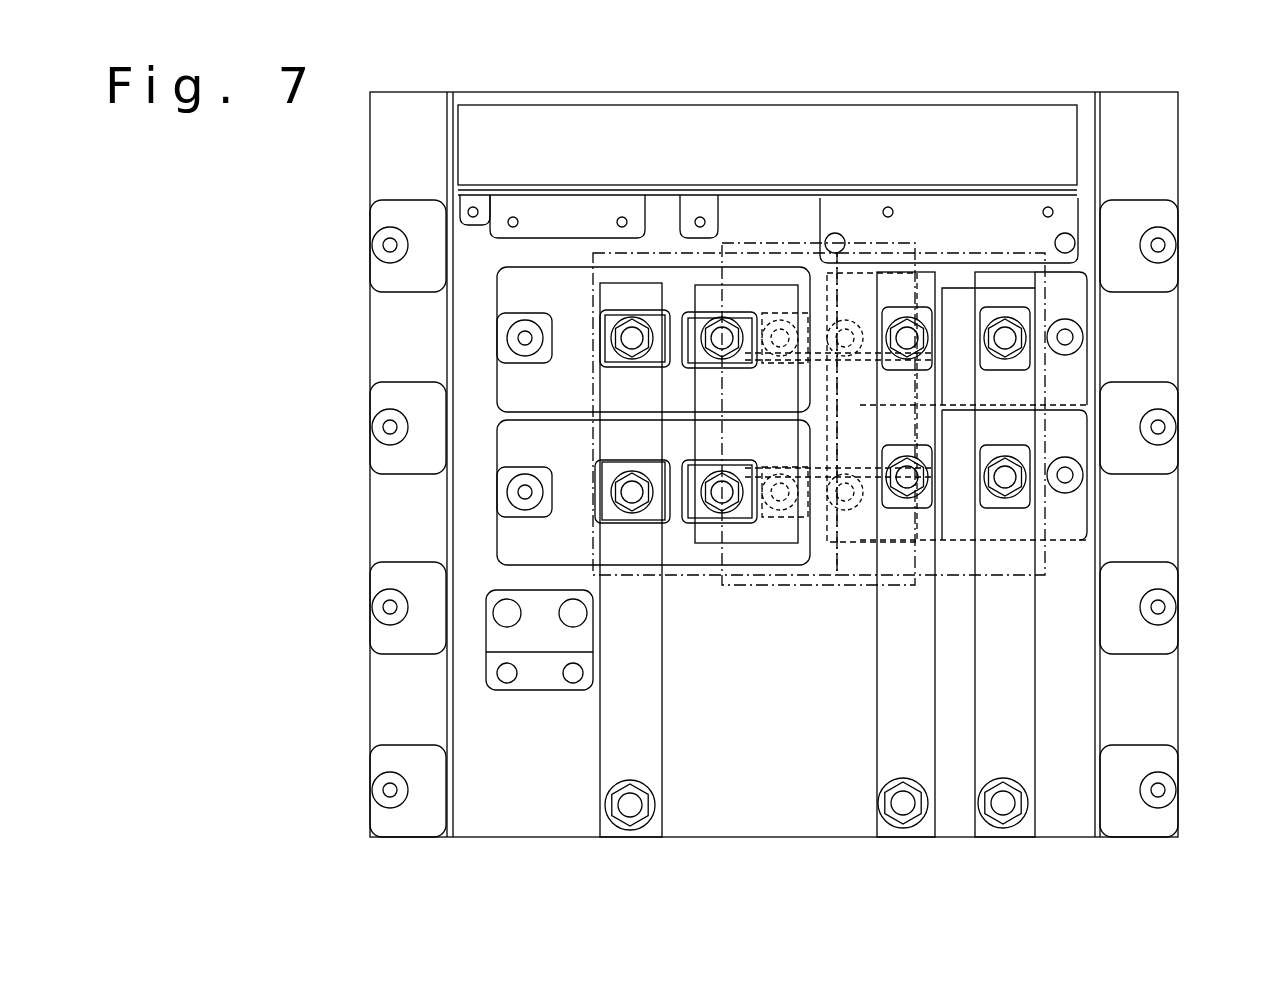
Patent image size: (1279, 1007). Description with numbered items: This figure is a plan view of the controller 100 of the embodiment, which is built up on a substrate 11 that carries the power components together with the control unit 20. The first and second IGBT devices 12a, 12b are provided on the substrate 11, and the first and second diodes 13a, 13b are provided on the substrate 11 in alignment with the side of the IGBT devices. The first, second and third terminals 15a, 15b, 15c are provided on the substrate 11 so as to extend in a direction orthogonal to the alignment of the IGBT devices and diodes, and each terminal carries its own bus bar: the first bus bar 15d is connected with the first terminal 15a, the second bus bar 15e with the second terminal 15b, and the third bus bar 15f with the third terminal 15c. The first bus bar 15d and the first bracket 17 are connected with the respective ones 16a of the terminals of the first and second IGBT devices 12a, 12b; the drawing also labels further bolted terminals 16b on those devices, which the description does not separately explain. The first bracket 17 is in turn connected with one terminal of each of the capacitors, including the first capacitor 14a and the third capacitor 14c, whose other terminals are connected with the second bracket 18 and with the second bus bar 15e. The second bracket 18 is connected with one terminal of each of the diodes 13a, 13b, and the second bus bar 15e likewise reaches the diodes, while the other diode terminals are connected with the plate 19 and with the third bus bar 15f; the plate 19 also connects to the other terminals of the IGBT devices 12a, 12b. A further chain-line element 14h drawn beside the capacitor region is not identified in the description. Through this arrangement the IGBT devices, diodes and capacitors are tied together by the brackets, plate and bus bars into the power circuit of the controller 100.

The controller 100 is at (240, 257).
The substrate 11 is at (475, 815).
The first IGBT device 12a is at (497, 292).
The second IGBT device 12b is at (497, 532).
The first diode 13a is at (1088, 365).
The second diode 13b is at (1090, 530).
The first capacitor 14a is at (790, 243).
The third capacitor 14c is at (815, 587).
The capacitor lead 14h is at (920, 397).
The first terminal 15a is at (630, 805).
The second terminal 15b is at (903, 805).
The third terminal 15c is at (1003, 805).
The first bus bar 15d is at (615, 722).
The second bus bar 15e is at (890, 722).
The third bus bar 15f is at (1018, 722).
The terminal of IGBT device 16a is at (625, 345).
The terminal bolt 16b is at (722, 318).
The first bracket 17 is at (665, 252).
The second bracket 18 is at (1008, 252).
The plate 19 is at (693, 532).
The control unit 20 is at (478, 152).